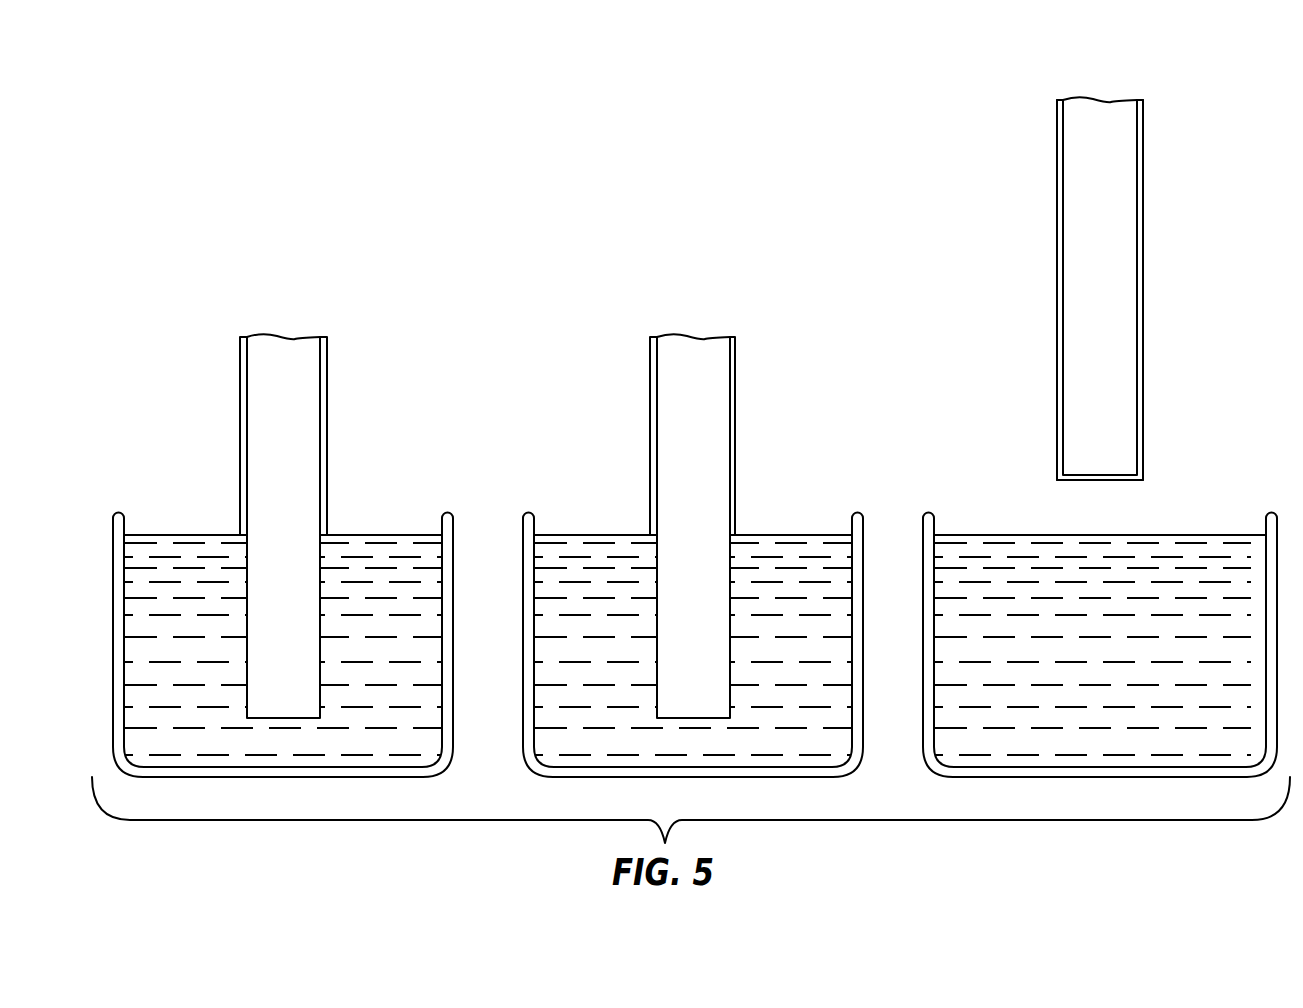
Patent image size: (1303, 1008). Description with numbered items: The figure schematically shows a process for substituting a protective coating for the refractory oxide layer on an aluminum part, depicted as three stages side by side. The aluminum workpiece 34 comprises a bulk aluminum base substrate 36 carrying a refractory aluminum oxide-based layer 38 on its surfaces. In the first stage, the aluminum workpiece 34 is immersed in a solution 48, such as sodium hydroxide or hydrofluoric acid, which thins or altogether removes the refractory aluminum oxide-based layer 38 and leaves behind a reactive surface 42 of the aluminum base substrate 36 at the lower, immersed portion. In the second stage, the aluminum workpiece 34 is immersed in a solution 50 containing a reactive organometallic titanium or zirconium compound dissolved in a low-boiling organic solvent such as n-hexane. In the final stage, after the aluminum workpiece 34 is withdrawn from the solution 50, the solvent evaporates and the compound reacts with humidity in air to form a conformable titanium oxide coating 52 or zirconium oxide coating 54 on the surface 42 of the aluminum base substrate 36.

The aluminum workpiece 34 is at (352, 366).
The aluminum base substrate 36 is at (287, 358).
The refractory aluminum oxide-based layer 38 is at (240, 422).
The reactive surface 42 is at (322, 695).
The solution 48 is at (185, 658).
The solution 50 is at (609, 658).
The titanium oxide coating 52 is at (1057, 380).
The zirconium oxide coating 54 is at (1143, 366).